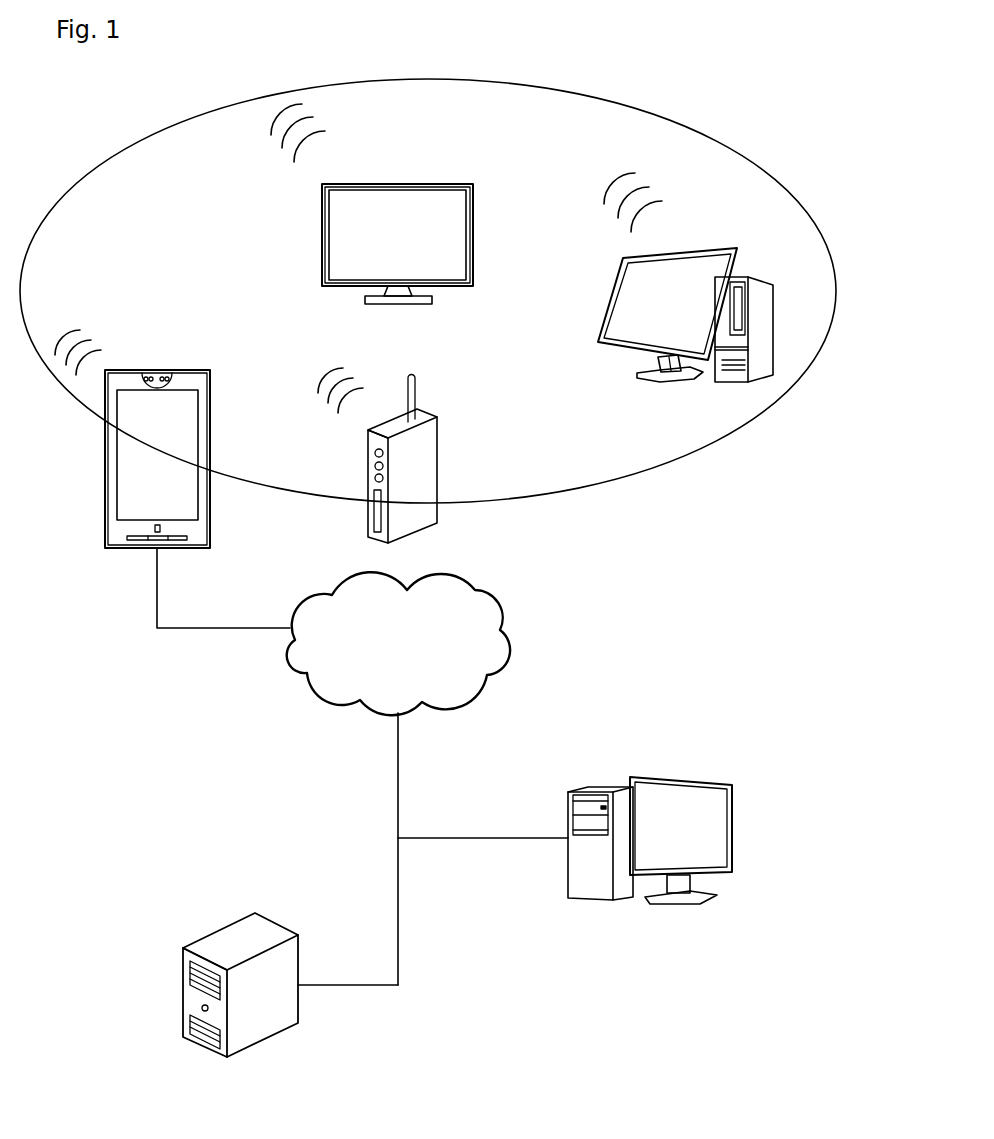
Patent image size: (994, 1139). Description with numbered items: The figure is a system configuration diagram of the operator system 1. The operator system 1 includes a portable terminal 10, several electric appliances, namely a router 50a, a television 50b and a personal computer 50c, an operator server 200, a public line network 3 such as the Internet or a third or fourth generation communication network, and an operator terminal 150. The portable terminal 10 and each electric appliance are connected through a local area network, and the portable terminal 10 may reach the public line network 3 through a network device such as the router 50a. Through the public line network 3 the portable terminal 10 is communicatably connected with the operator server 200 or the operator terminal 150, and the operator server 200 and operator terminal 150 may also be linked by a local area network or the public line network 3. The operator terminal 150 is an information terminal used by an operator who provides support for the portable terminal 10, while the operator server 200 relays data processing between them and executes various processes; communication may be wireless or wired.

The operator system 1 is at (714, 1054).
The public line network 3 is at (473, 587).
The portable terminal 10 is at (152, 370).
The router 50a is at (442, 452).
The television 50b is at (348, 184).
The personal computer 50c is at (724, 257).
The operator terminal 150 is at (713, 782).
The operator server 200 is at (257, 913).